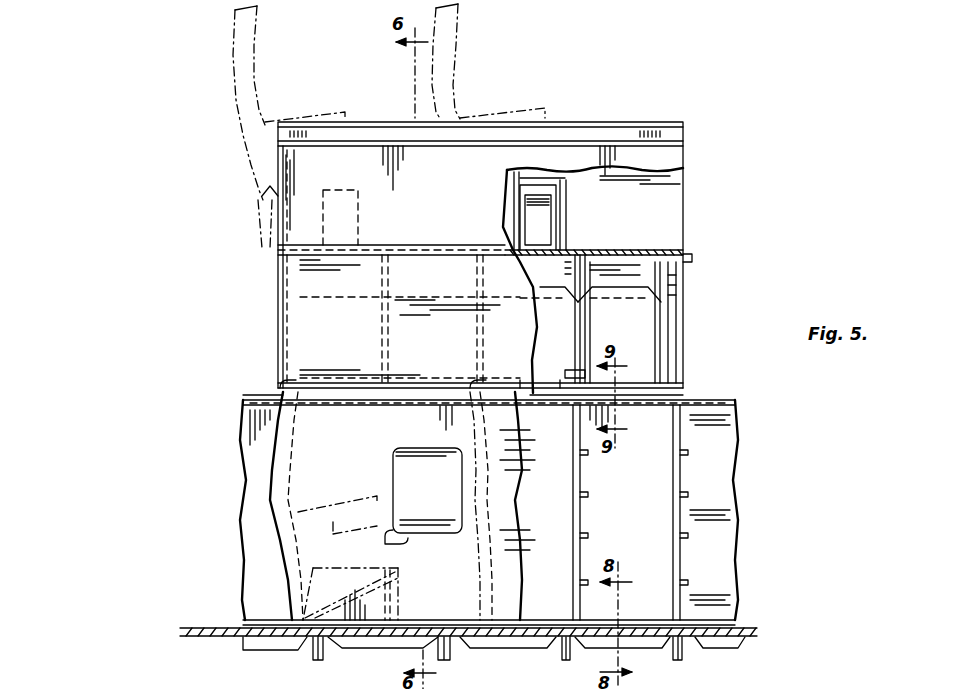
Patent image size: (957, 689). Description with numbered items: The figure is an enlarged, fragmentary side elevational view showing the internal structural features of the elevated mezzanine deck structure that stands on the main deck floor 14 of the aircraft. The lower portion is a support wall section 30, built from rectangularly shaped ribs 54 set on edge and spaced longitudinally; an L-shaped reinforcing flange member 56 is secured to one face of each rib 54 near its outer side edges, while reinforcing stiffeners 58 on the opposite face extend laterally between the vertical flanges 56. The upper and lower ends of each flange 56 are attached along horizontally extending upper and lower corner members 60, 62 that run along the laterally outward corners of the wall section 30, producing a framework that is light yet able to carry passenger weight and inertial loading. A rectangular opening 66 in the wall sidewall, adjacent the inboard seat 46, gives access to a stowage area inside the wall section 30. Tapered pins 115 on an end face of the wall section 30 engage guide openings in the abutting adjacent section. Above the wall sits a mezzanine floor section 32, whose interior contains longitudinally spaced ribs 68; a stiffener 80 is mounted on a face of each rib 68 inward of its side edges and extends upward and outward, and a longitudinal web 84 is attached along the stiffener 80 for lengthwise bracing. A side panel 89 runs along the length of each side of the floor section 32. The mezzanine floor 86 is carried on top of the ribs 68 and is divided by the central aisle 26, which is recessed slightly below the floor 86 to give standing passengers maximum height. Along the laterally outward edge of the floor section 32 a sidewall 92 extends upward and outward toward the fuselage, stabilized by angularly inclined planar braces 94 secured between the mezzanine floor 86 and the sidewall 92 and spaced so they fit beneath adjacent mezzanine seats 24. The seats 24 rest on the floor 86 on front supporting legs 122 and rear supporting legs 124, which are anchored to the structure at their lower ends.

The main deck floor 14 is at (745, 628).
The mezzanine seats 24 is at (238, 40).
The aisle 26 is at (300, 297).
The support wall section 30 is at (700, 406).
The mezzanine floor section 32 is at (655, 343).
The inboard seat 46 is at (275, 446).
The rib 54 is at (683, 466).
The L-shaped reinforcing flange member 56 is at (683, 514).
The reinforcing stiffener 58 is at (683, 572).
The upper corner member 60 is at (668, 406).
The lower corner member 62 is at (672, 618).
The rectangular opening 66 is at (407, 482).
The rib 68 is at (567, 372).
The left stiffener 80 is at (578, 331).
The left web 84 is at (637, 322).
The mezzanine floor 86 is at (648, 250).
The side panel 89 is at (300, 330).
The sidewall 92 is at (305, 187).
The brace 94 is at (545, 222).
The tapered pin 115 is at (683, 132).
The front supporting leg 122 is at (405, 592).
The rear supporting leg 124 is at (306, 580).